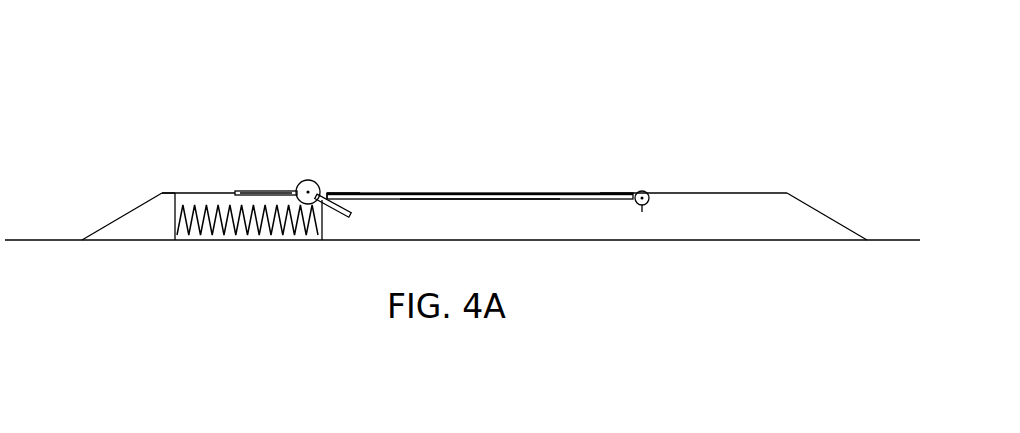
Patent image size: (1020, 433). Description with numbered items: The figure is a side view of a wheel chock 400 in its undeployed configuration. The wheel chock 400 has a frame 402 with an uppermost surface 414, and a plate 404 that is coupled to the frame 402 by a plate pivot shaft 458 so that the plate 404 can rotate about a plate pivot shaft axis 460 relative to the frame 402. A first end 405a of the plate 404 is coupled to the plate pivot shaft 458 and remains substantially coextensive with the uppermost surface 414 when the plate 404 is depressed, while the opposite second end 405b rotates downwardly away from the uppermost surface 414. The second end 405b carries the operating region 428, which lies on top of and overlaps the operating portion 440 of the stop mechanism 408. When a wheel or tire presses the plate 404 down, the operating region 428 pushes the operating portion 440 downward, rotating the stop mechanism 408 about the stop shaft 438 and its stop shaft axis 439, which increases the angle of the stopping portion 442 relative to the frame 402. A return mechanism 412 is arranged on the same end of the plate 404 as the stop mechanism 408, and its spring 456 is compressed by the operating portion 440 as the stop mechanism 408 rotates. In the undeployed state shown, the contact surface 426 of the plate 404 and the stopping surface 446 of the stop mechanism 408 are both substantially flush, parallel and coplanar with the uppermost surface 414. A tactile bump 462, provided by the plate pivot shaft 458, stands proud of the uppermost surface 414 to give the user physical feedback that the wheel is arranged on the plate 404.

The wheel chock 400 is at (773, 31).
The frame 402 is at (797, 213).
The plate 404 is at (522, 193).
The first end of the plate 405a is at (632, 193).
The second end of the plate 405b is at (343, 193).
The stop mechanism 408 is at (274, 178).
The return mechanism 412 is at (240, 252).
The uppermost surface 414 is at (716, 193).
The contact surface 426 is at (458, 193).
The operating region 428 is at (350, 193).
The stop shaft 438 is at (300, 182).
The stop shaft axis 439 is at (308, 192).
The operating portion 440 is at (333, 240).
The stopping portion 442 is at (237, 191).
The stopping surface 446 is at (260, 191).
The spring 456 is at (203, 240).
The plate pivot shaft 458 is at (645, 193).
The plate pivot shaft axis 460 is at (642, 205).
The tactile bump 462 is at (642, 191).